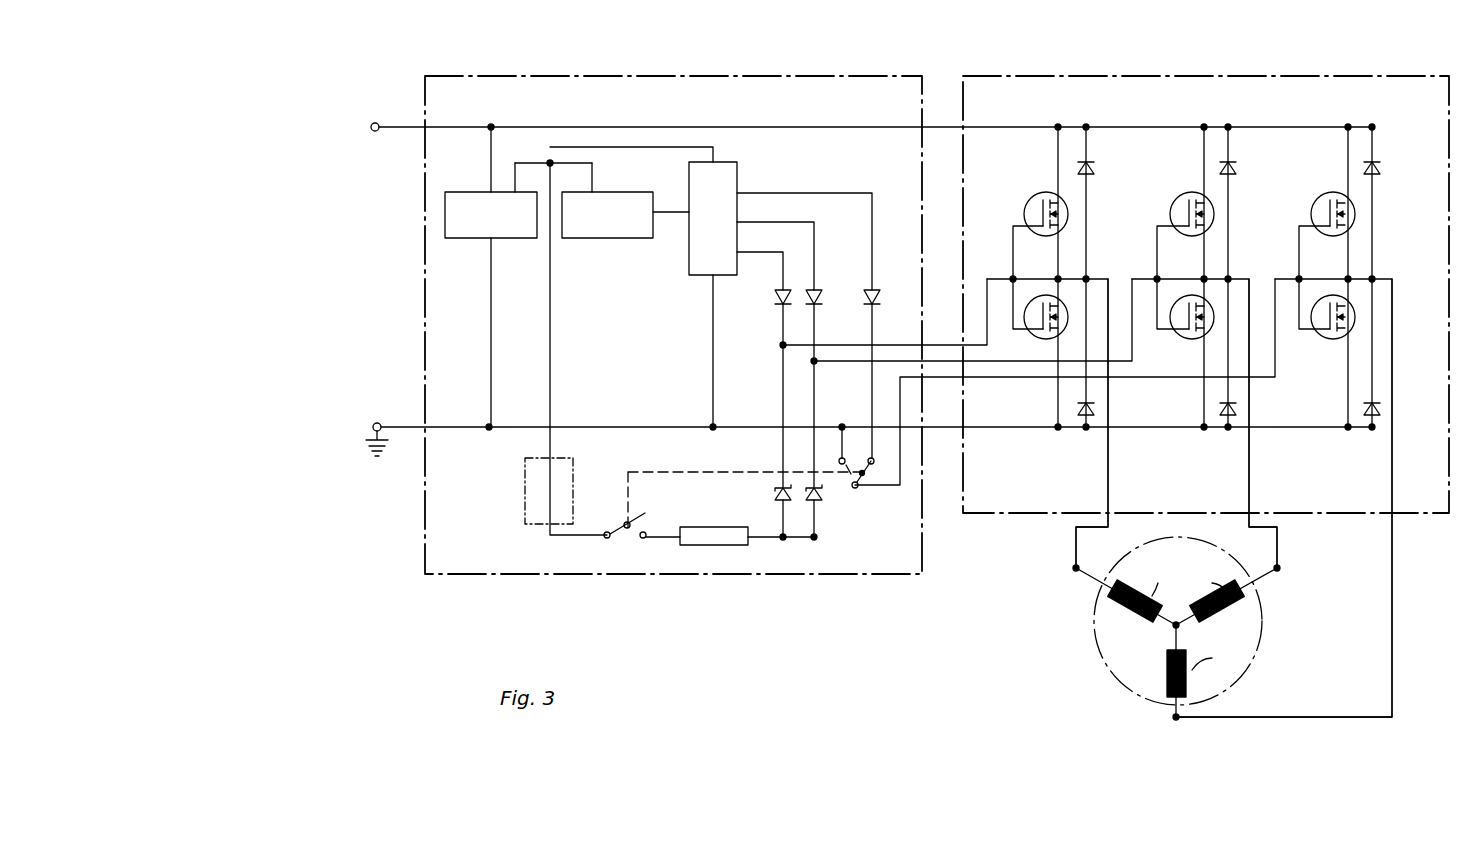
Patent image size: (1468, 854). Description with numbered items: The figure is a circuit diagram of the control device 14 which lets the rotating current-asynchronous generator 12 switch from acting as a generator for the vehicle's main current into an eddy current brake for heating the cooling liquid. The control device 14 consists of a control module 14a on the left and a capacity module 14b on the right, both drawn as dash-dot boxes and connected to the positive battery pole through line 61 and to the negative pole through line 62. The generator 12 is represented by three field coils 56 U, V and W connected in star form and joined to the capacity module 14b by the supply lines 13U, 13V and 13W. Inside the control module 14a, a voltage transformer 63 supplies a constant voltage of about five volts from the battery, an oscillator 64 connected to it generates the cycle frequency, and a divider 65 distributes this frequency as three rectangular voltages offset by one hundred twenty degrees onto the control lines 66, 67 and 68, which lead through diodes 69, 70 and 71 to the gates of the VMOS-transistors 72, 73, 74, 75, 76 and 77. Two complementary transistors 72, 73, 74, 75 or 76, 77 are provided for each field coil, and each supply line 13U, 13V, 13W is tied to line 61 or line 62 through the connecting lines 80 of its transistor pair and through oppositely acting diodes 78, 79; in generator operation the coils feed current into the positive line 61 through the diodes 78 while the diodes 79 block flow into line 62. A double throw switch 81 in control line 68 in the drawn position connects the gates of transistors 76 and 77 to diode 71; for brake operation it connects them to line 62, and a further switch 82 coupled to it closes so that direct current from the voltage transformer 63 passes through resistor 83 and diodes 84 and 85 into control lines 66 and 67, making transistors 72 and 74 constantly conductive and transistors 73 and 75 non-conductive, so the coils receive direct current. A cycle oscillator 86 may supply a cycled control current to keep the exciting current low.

The rotating current-asynchronous generator 12 is at (1092, 650).
The supply line U 13U is at (1076, 540).
The supply line V 13V is at (1277, 540).
The supply line W 13W is at (1392, 540).
The control device 14 is at (928, 70).
The control module 14a is at (724, 76).
The capacity module 14b is at (1140, 76).
The field coils 56 is at (1166, 665).
The line to positive pole 61 is at (395, 122).
The line to negative pole 62 is at (396, 426).
The voltage transformer 63 is at (518, 240).
The oscillator 64 is at (603, 240).
The divider 65 is at (689, 262).
The control line 66 is at (782, 328).
The control line 67 is at (818, 328).
The control line 68 is at (876, 328).
The diode 69 is at (780, 304).
The diode 70 is at (818, 304).
The diode 71 is at (878, 304).
The VMOS-transistor 72 is at (1030, 208).
The VMOS-transistor 73 is at (1036, 300).
The VMOS-transistor 74 is at (1182, 208).
The VMOS-transistor 75 is at (1180, 300).
The VMOS-transistor 76 is at (1322, 208).
The VMOS-transistor 77 is at (1322, 300).
The diode 78 is at (1092, 170).
The diode 79 is at (1094, 409).
The connecting line 80 is at (1060, 255).
The double throw switch 81 is at (862, 490).
The switch 82 is at (624, 530).
The resistor 83 is at (730, 546).
The diode 84 is at (774, 497).
The diode 85 is at (818, 497).
The cycle oscillator 86 is at (524, 482).